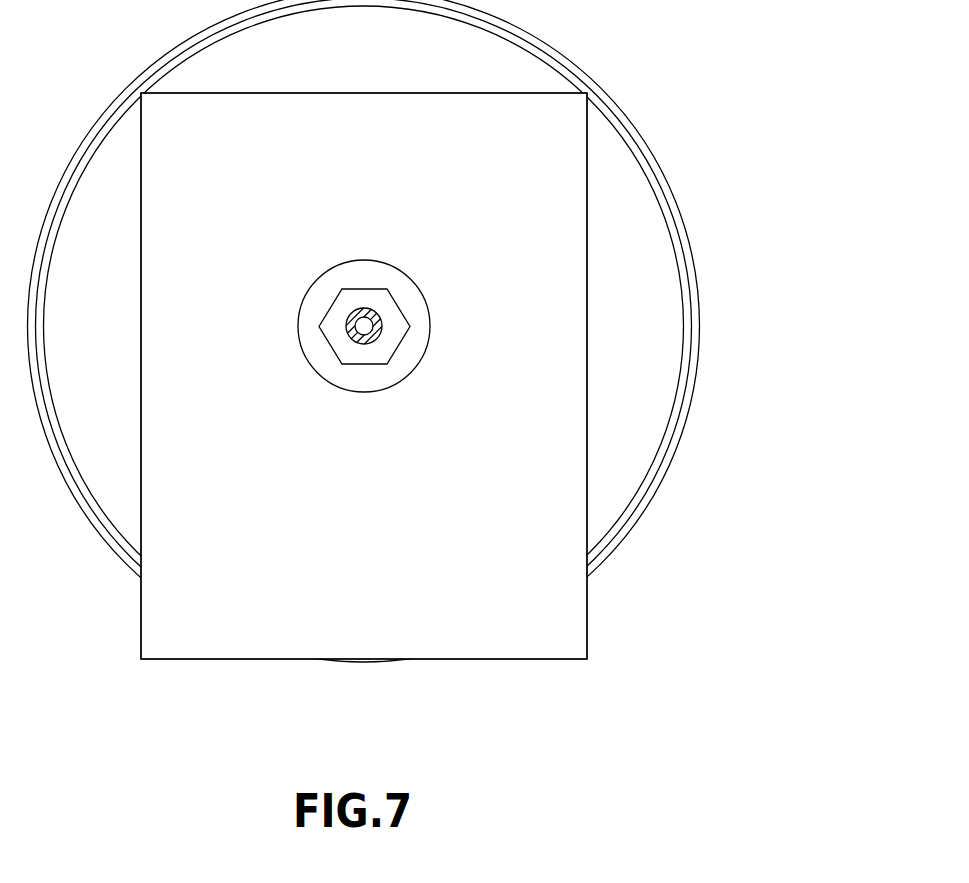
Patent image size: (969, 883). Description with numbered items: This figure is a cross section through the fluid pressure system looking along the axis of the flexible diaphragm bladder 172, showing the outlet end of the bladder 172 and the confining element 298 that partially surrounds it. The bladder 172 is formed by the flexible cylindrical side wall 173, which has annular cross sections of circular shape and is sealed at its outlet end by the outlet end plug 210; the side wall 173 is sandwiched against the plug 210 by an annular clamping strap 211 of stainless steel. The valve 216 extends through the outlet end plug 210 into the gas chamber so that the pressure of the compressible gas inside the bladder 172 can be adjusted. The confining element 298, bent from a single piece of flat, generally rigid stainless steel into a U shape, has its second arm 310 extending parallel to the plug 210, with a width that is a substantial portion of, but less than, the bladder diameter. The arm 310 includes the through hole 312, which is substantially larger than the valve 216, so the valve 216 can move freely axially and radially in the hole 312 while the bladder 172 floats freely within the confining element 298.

The through hole 312 is at (392, 282).
The valve 216 is at (380, 317).
The outlet end plug 210 is at (630, 247).
The annular clamping strap 211 is at (697, 288).
The cylindrical side wall 173 is at (688, 325).
The flexible diaphragm bladder 172 is at (677, 397).
The confining element 298 is at (228, 633).
The second arm 310 is at (502, 632).